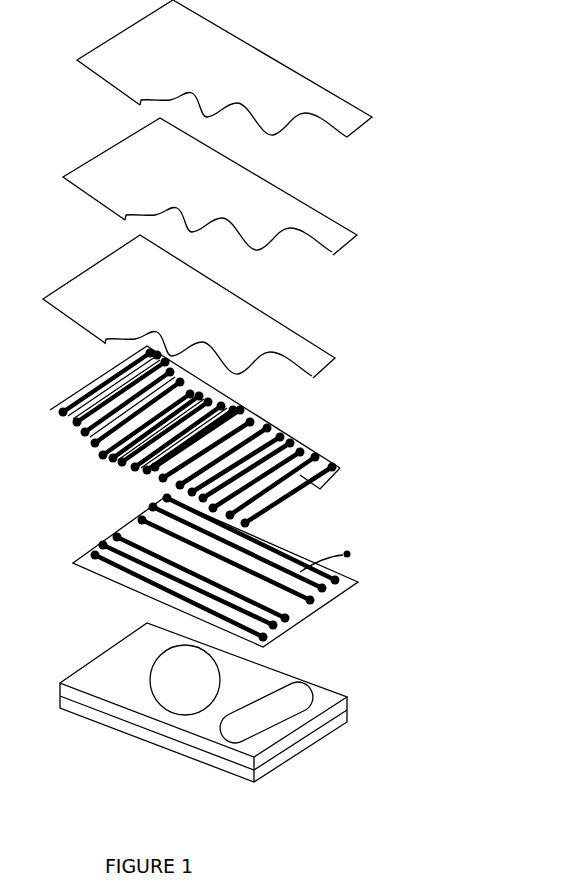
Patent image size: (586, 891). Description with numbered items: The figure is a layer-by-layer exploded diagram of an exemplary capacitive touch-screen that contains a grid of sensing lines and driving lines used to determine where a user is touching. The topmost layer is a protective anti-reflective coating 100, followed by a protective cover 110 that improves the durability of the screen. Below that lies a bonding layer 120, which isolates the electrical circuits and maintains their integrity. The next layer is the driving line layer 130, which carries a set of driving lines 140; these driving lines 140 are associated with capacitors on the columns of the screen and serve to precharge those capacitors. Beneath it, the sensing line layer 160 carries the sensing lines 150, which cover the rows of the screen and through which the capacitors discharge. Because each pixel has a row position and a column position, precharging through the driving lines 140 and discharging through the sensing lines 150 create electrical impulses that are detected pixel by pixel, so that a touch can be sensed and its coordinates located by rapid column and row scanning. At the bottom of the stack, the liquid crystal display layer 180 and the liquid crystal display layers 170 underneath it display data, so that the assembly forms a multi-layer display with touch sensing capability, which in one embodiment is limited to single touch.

The protective anti-reflective coating 100 is at (184, 30).
The protective cover 110 is at (181, 155).
The bonding layer 120 is at (154, 275).
The driving line layer 130 is at (277, 428).
The driving lines 140 is at (336, 457).
The sensing lines 150 is at (336, 554).
The sensing line layer 160 is at (263, 543).
The liquid crystal display layers 170 is at (349, 702).
The liquid crystal display layer 180 is at (168, 644).